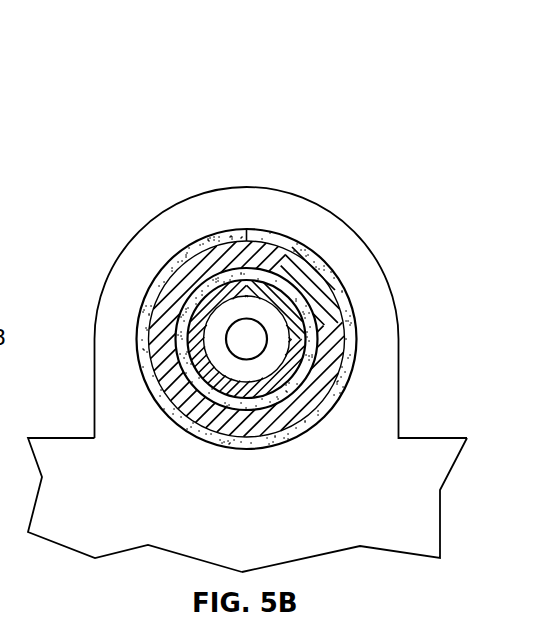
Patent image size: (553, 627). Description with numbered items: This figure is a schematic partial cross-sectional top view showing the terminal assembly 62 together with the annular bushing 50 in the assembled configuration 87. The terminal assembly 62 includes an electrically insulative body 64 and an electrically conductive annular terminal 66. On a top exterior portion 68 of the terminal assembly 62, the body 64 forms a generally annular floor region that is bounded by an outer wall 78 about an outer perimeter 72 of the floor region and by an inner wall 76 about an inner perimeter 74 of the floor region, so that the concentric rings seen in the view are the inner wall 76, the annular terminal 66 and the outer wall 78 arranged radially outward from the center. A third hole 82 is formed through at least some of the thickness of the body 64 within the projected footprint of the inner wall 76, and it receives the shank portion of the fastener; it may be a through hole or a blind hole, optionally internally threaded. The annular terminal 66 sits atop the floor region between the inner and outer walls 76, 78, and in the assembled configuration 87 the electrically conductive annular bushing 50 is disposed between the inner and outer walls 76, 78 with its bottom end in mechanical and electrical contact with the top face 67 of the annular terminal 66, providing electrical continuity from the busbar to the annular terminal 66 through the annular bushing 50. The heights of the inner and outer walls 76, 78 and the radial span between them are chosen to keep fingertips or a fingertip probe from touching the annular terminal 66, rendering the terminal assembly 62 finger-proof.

The annular bushing 50 is at (275, 243).
The terminal assembly 62 is at (227, 153).
The body 64 is at (158, 468).
The annular terminal 66 is at (325, 262).
The top face 67 is at (307, 300).
The top exterior portion 68 is at (135, 505).
The outer perimeter 72 is at (223, 243).
The inner perimeter 74 is at (197, 285).
The inner wall 76 is at (246, 339).
The outer wall 78 is at (320, 227).
The third hole 82 is at (252, 337).
The assembled configuration 87 is at (332, 150).